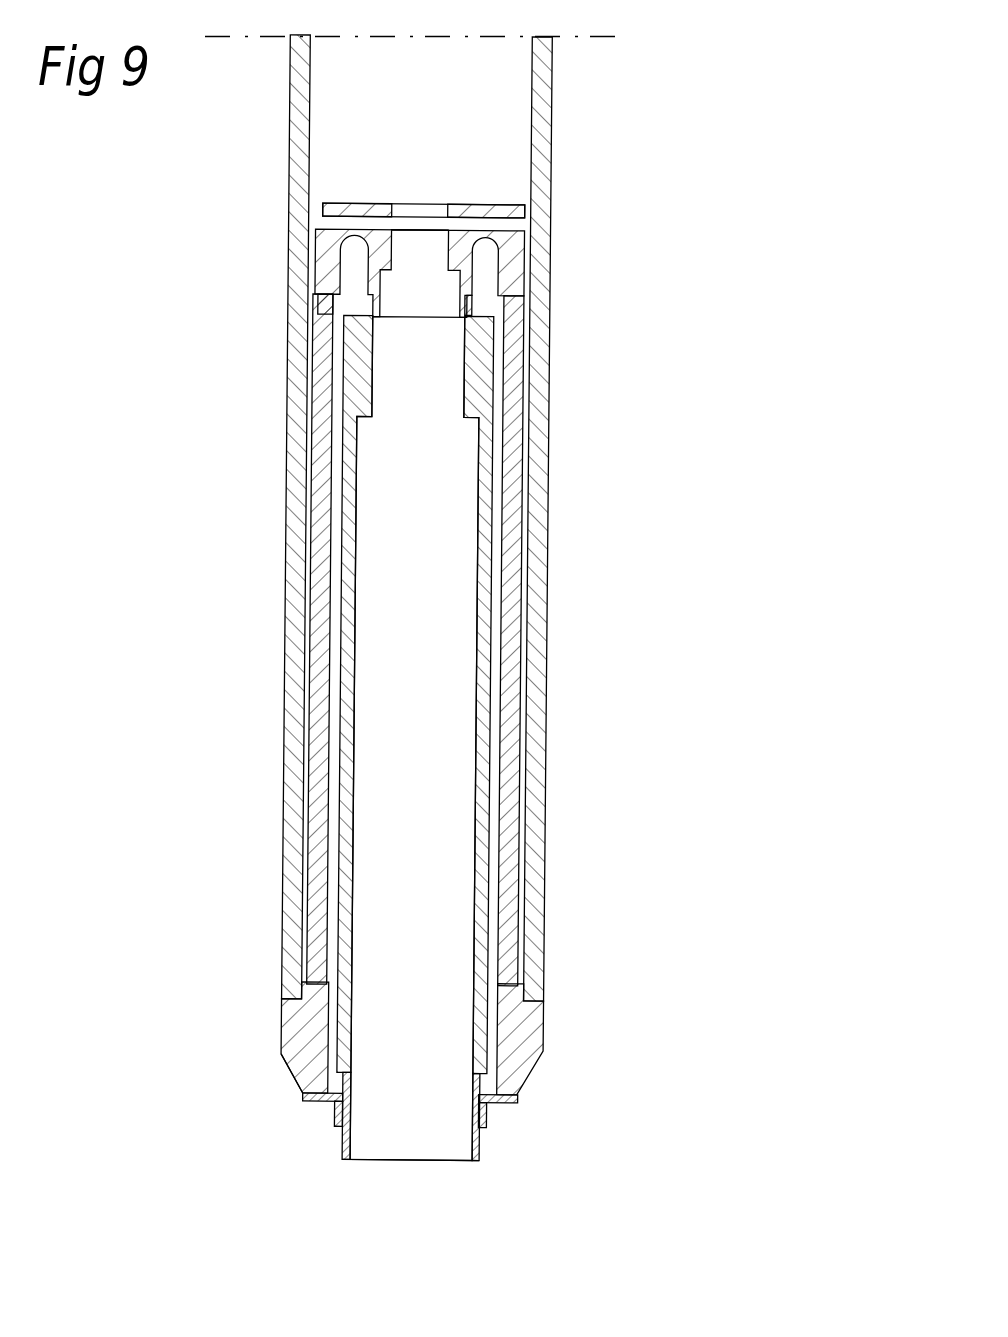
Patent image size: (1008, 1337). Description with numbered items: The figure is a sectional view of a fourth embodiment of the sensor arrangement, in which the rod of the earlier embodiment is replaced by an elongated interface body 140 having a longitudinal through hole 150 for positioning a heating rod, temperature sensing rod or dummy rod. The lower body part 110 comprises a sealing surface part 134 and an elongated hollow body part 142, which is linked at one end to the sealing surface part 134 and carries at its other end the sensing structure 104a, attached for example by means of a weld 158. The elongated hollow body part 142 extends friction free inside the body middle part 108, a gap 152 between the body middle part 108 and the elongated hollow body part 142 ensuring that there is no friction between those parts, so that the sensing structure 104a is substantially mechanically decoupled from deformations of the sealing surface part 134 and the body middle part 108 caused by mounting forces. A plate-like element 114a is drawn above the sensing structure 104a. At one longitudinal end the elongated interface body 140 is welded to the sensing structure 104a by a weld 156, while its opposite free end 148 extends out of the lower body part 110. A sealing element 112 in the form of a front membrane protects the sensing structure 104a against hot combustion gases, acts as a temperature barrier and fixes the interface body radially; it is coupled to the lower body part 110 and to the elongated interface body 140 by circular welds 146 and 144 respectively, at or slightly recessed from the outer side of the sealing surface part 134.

The sensing structure 104a is at (500, 253).
The body middle part 108 is at (293, 880).
The lower body part 110 is at (518, 1045).
The sealing element 112 is at (324, 1104).
The plate 114a is at (483, 207).
The sealing surface part 134 is at (301, 1090).
The elongated interface body 140 is at (487, 515).
The elongated hollow body part 142 is at (512, 466).
The circular weld 144 is at (487, 1120).
The circular weld 146 is at (520, 1100).
The free end 148 is at (480, 1163).
The longitudinal through hole 150 is at (412, 1160).
The gap 152 is at (537, 402).
The weld 156 is at (375, 287).
The weld 158 is at (513, 298).